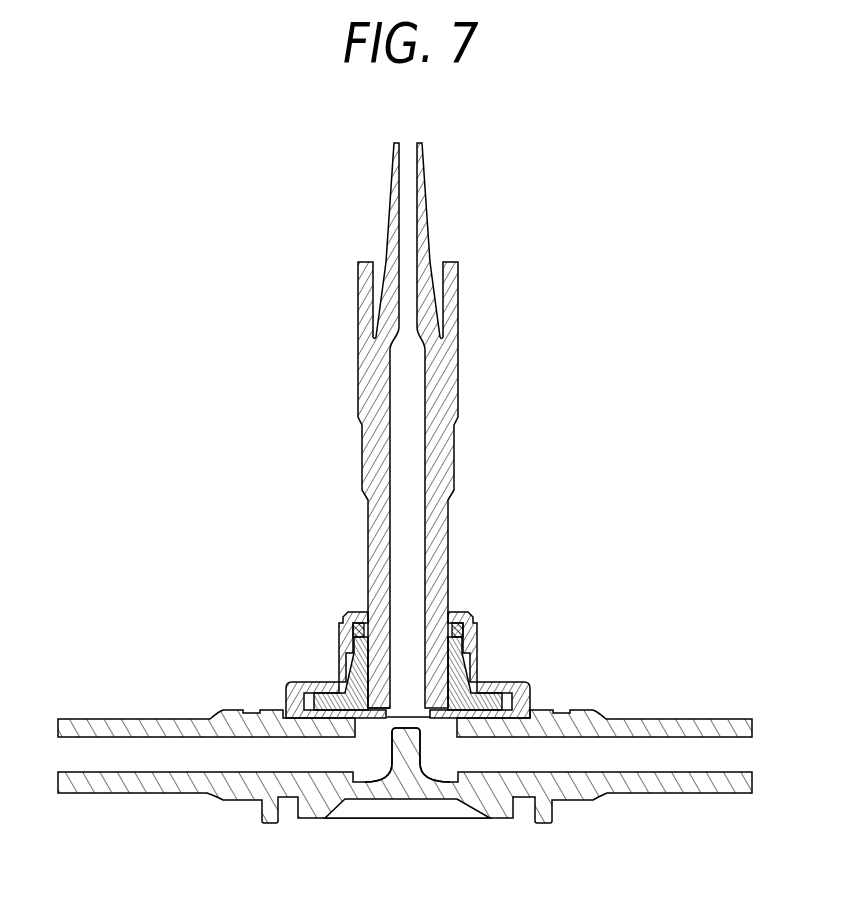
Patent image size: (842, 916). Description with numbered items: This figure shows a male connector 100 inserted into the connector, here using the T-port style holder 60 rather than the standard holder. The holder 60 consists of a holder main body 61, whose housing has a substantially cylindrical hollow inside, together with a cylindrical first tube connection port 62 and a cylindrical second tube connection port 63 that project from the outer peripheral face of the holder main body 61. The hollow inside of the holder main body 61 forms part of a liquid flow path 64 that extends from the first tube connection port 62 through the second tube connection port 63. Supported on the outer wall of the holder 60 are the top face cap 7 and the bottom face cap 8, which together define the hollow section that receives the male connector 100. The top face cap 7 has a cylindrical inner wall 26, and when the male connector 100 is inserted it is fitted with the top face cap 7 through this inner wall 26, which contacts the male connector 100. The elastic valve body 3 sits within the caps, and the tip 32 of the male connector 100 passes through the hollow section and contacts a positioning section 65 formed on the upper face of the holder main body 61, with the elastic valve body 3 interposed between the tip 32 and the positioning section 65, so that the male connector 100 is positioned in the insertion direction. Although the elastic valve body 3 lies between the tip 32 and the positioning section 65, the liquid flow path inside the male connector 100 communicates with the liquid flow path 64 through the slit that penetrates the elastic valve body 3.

The male connector 100 is at (447, 484).
The inner wall 26 is at (346, 619).
The top face cap 7 is at (468, 607).
The elastic valve body 3 is at (478, 665).
The tip 32 is at (407, 705).
The bottom face cap 8 is at (502, 682).
The positioning section 65 is at (385, 712).
The first tube connection port 62 is at (118, 727).
The second tube connection port 63 is at (597, 716).
The holder 60 is at (405, 773).
The holder main body 61 is at (475, 797).
The liquid flow path 64 is at (383, 753).